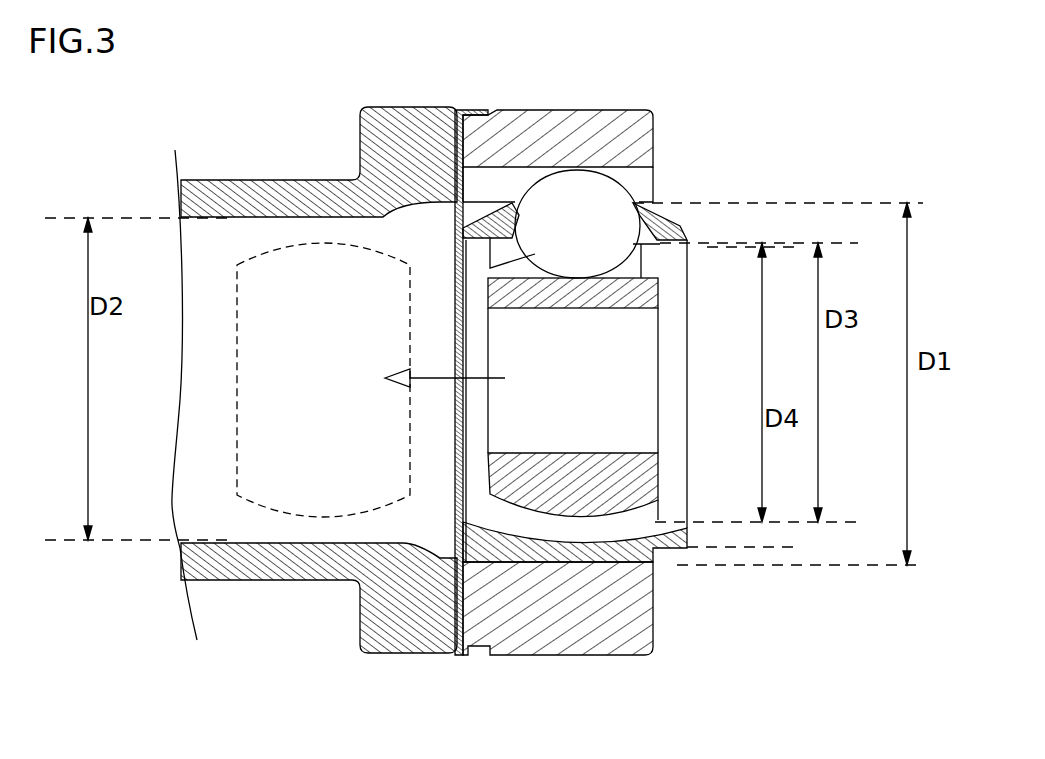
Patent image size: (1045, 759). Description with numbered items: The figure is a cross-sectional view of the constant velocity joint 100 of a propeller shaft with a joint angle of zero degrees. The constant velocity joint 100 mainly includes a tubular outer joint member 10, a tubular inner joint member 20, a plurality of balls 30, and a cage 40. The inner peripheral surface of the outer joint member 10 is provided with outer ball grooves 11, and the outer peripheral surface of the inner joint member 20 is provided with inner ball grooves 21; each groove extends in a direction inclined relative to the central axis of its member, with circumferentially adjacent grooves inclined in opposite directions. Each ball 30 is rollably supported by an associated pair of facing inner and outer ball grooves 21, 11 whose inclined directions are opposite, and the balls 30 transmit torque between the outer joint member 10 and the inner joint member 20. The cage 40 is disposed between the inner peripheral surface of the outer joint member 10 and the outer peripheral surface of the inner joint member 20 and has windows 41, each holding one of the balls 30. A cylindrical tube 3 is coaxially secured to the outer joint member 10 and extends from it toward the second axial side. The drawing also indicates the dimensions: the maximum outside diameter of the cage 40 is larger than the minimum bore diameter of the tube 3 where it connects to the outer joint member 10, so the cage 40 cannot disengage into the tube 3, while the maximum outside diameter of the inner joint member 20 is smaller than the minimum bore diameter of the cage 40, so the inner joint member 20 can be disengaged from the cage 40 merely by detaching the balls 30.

The constant velocity joint 100 is at (422, 97).
The tube 3 is at (291, 178).
The outer joint member 10 is at (566, 655).
The outer ball grooves 11 is at (523, 168).
The inner joint member 20 is at (292, 513).
The inner ball grooves 21 is at (640, 278).
The balls 30 is at (550, 168).
The cage 40 is at (647, 547).
The windows 41 is at (637, 200).